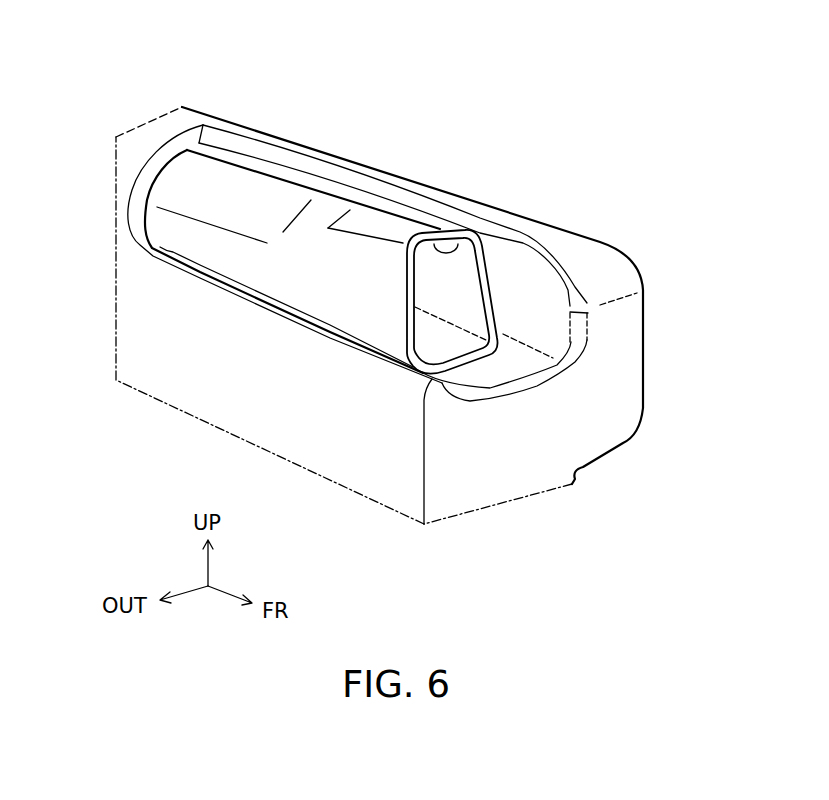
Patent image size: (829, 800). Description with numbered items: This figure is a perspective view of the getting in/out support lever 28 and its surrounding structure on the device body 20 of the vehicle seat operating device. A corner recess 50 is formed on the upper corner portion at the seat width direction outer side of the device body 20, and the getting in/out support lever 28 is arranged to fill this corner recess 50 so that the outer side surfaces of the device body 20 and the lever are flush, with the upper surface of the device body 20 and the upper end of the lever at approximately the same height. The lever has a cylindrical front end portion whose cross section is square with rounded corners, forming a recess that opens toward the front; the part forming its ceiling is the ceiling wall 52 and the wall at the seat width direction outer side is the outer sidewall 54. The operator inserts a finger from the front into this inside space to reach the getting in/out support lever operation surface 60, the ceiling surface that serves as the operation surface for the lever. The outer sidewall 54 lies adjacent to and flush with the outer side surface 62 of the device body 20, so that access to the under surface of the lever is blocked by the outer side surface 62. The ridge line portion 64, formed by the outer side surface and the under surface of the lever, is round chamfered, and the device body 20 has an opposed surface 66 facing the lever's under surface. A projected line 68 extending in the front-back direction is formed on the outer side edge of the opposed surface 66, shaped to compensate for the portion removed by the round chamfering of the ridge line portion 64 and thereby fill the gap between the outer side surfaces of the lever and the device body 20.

The device body 20 is at (596, 231).
The getting in/out support lever 28 is at (325, 184).
The corner recess 50 is at (515, 276).
The ceiling wall 52 is at (400, 222).
The outer sidewall 54 is at (337, 297).
The getting in/out support lever operation surface 60 is at (458, 243).
The outer side surface 62 is at (307, 398).
The ridge line portion 64 is at (340, 333).
The opposed surface 66 is at (507, 363).
The projected line 68 is at (410, 380).